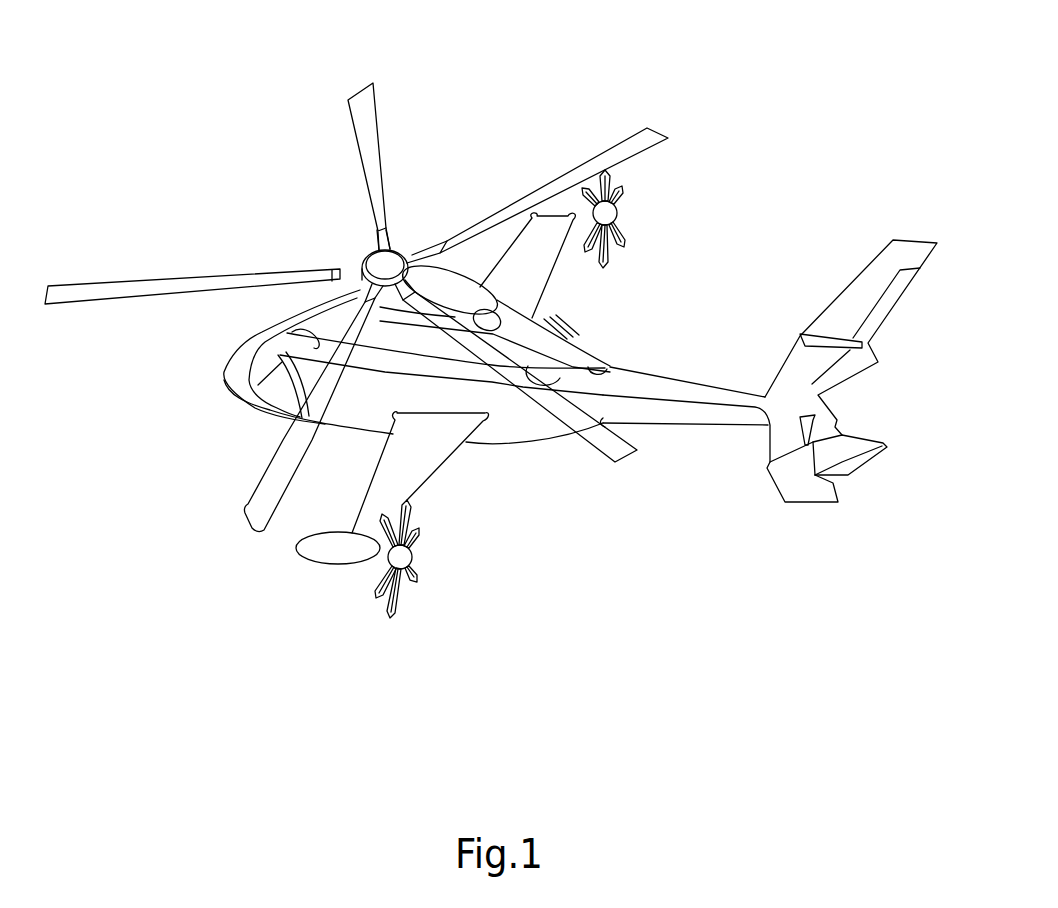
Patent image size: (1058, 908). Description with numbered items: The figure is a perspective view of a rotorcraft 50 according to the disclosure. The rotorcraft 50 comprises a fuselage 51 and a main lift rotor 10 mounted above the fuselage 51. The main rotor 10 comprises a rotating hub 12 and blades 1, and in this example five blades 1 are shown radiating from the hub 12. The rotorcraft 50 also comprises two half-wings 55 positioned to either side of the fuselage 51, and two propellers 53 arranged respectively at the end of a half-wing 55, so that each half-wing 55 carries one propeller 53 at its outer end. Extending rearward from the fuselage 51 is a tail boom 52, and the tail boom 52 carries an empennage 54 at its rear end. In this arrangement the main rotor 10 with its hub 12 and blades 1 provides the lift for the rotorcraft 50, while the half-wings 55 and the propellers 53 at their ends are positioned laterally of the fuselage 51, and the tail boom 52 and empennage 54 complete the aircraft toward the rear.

The blade 1 is at (607, 147).
The main lift rotor 10 is at (260, 185).
The rotating hub 12 is at (395, 257).
The rotorcraft 50 is at (190, 630).
The fuselage 51 is at (247, 400).
The tail boom 52 is at (693, 410).
The propeller 53 is at (627, 229).
The empennage 54 is at (856, 393).
The half-wing 55 is at (523, 273).